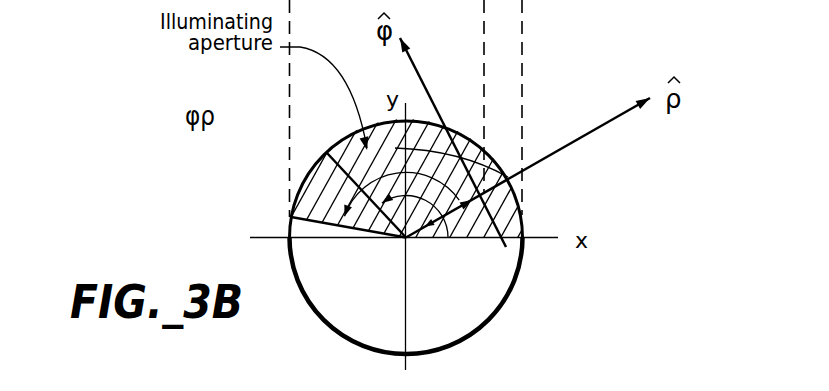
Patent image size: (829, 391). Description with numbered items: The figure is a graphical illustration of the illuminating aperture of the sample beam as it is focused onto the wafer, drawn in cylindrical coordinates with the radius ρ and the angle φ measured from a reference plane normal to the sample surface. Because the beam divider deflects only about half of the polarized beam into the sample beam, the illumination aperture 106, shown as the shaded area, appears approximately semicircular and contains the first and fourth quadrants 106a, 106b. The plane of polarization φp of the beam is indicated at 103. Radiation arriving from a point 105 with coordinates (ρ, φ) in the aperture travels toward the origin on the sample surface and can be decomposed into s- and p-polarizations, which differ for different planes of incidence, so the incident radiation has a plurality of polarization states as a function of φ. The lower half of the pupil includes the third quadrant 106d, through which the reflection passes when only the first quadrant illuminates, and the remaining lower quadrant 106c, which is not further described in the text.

The plane of polarization 103 is at (395, 148).
The point 105 is at (500, 240).
The illumination aperture 106 is at (611, 158).
The first quadrant 106a is at (503, 228).
The fourth quadrant 106b is at (508, 177).
The pupil edge arc 106c is at (443, 318).
The third quadrant 106d is at (370, 328).